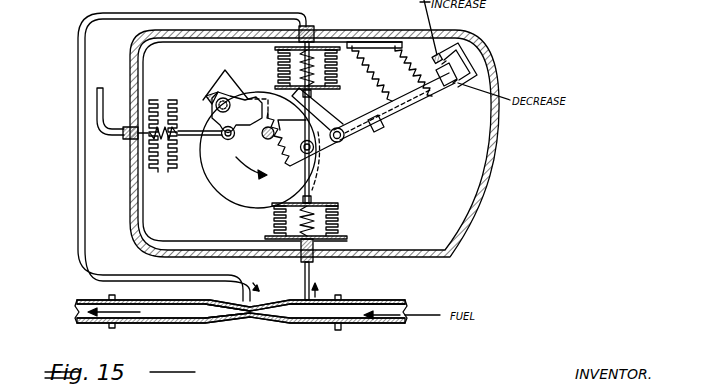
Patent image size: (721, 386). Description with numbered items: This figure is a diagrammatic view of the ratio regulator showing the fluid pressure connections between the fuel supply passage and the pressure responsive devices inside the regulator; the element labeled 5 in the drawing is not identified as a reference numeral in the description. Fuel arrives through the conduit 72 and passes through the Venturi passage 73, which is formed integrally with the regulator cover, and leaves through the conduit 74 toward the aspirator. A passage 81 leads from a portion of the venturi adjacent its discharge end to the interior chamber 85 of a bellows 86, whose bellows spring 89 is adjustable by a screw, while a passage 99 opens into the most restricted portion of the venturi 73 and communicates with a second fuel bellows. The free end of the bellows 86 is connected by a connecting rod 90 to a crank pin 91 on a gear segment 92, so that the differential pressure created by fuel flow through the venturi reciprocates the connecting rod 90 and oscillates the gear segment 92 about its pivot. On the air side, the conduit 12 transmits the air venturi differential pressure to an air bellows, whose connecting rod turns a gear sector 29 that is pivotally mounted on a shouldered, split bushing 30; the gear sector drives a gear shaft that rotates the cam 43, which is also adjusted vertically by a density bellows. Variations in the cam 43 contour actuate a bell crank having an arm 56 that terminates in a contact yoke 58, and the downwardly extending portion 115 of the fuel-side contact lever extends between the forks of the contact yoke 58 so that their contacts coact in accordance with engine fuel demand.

The conduit 12 is at (100, 117).
The split bushing 30 is at (212, 100).
The gear sector 29 is at (258, 95).
The bellows 5 is at (309, 88).
The arm 56 is at (422, 107).
The downwardly extending portion 115 is at (443, 90).
The contact yoke 58 is at (472, 46).
The crank pin 91 is at (313, 147).
The gear segment 92 is at (346, 140).
The connecting rod 90 is at (309, 196).
The cam 43 is at (238, 188).
The interior chamber 85 is at (273, 222).
The bellows 86 is at (340, 207).
The bellows spring 89 is at (312, 224).
The passage 81 is at (312, 268).
The passage 99 is at (78, 258).
The conduit 74 is at (80, 318).
The Venturi passage 73 is at (247, 326).
The conduit 72 is at (353, 326).